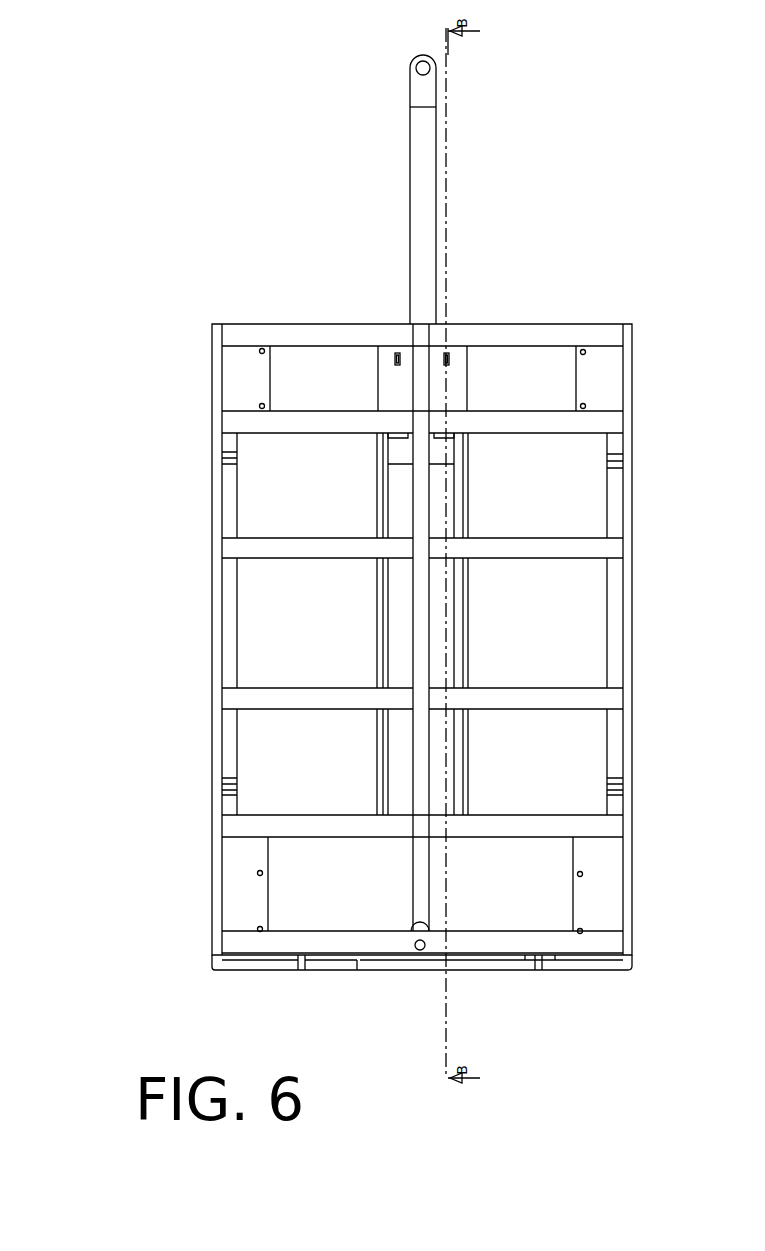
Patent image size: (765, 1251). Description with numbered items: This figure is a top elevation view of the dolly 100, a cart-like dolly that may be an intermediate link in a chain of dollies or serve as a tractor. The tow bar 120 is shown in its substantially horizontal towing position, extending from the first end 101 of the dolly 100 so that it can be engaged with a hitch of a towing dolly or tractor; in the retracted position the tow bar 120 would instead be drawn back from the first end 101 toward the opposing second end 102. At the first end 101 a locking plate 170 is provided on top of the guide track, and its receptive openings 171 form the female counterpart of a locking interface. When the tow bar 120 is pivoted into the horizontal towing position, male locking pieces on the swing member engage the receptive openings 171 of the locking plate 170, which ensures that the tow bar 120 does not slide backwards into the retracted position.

The dolly 100 is at (203, 308).
The first end 101 is at (589, 324).
The second end 102 is at (497, 972).
The tow bar 120 is at (425, 157).
The locking plate 170 is at (457, 384).
The receptive openings 171 is at (394, 358).